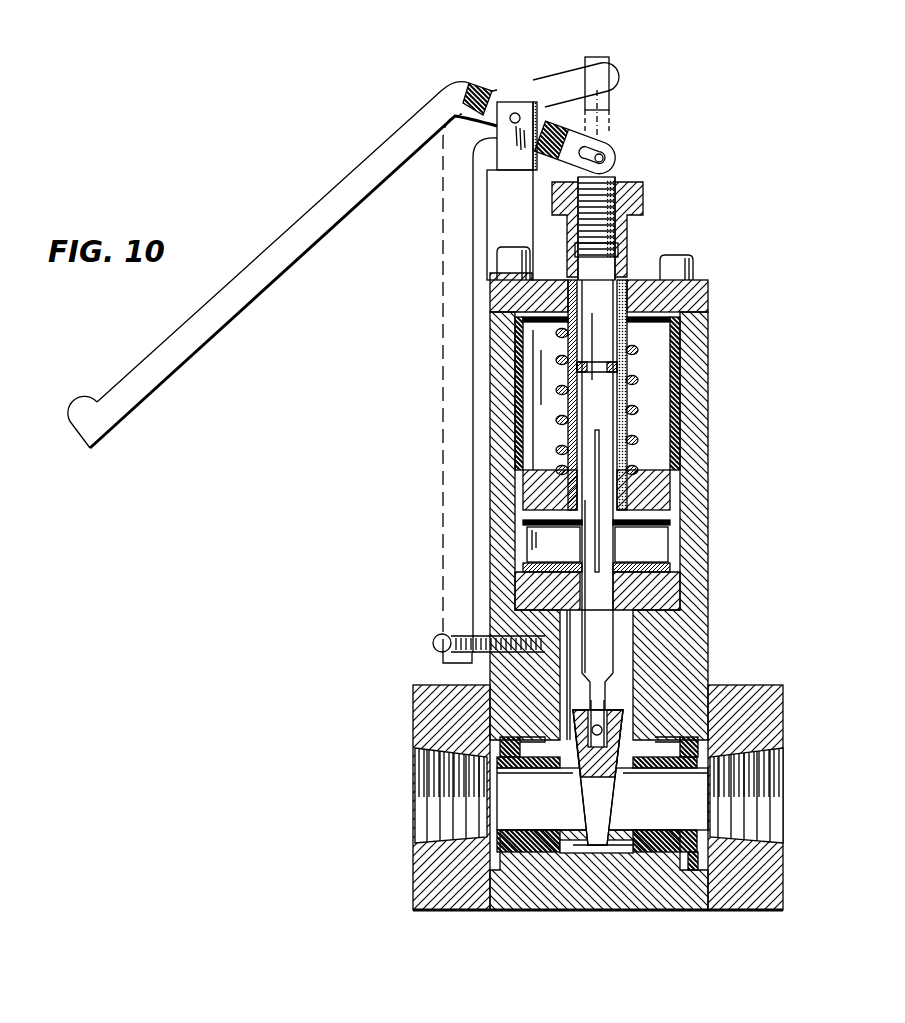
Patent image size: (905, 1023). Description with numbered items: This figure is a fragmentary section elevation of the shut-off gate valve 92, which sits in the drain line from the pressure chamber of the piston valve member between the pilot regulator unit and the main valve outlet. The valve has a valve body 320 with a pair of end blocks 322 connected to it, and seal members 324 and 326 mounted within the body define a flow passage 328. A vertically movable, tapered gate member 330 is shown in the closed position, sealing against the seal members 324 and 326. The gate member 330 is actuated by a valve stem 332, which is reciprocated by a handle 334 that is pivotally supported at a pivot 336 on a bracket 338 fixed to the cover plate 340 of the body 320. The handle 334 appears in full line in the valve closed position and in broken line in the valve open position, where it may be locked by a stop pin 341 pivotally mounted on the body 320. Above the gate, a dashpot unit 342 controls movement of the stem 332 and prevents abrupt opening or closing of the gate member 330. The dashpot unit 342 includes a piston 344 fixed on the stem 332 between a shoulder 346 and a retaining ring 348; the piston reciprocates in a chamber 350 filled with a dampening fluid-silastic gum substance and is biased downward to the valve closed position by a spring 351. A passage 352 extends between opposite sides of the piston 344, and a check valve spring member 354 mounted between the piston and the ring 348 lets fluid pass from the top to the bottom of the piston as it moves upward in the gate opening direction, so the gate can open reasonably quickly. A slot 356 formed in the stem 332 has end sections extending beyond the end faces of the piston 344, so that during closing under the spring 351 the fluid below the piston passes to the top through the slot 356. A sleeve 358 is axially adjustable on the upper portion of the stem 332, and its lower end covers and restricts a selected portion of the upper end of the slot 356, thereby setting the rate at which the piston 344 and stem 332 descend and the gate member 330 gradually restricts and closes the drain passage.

The shut-off gate valve 92 is at (372, 660).
The valve body 320 is at (708, 602).
The end blocks 322 is at (427, 709).
The seal member 324 is at (695, 862).
The seal member 326 is at (497, 852).
The flow passage 328 is at (682, 814).
The tapered gate member 330 is at (586, 798).
The valve stem 332 is at (622, 268).
The handle 334 is at (375, 148).
The pivot 336 is at (527, 75).
The bracket 338 is at (525, 204).
The cover plate 340 is at (708, 282).
The stop pin 341 is at (433, 642).
The dashpot unit 342 is at (716, 439).
The piston 344 is at (665, 512).
The shoulder 346 is at (618, 483).
The retaining ring 348 is at (625, 543).
The chamber 350 is at (660, 372).
The spring 351 is at (638, 350).
The passage 352 is at (540, 470).
The check valve spring member 354 is at (612, 528).
The slot 356 is at (599, 444).
The sleeve 358 is at (628, 226).